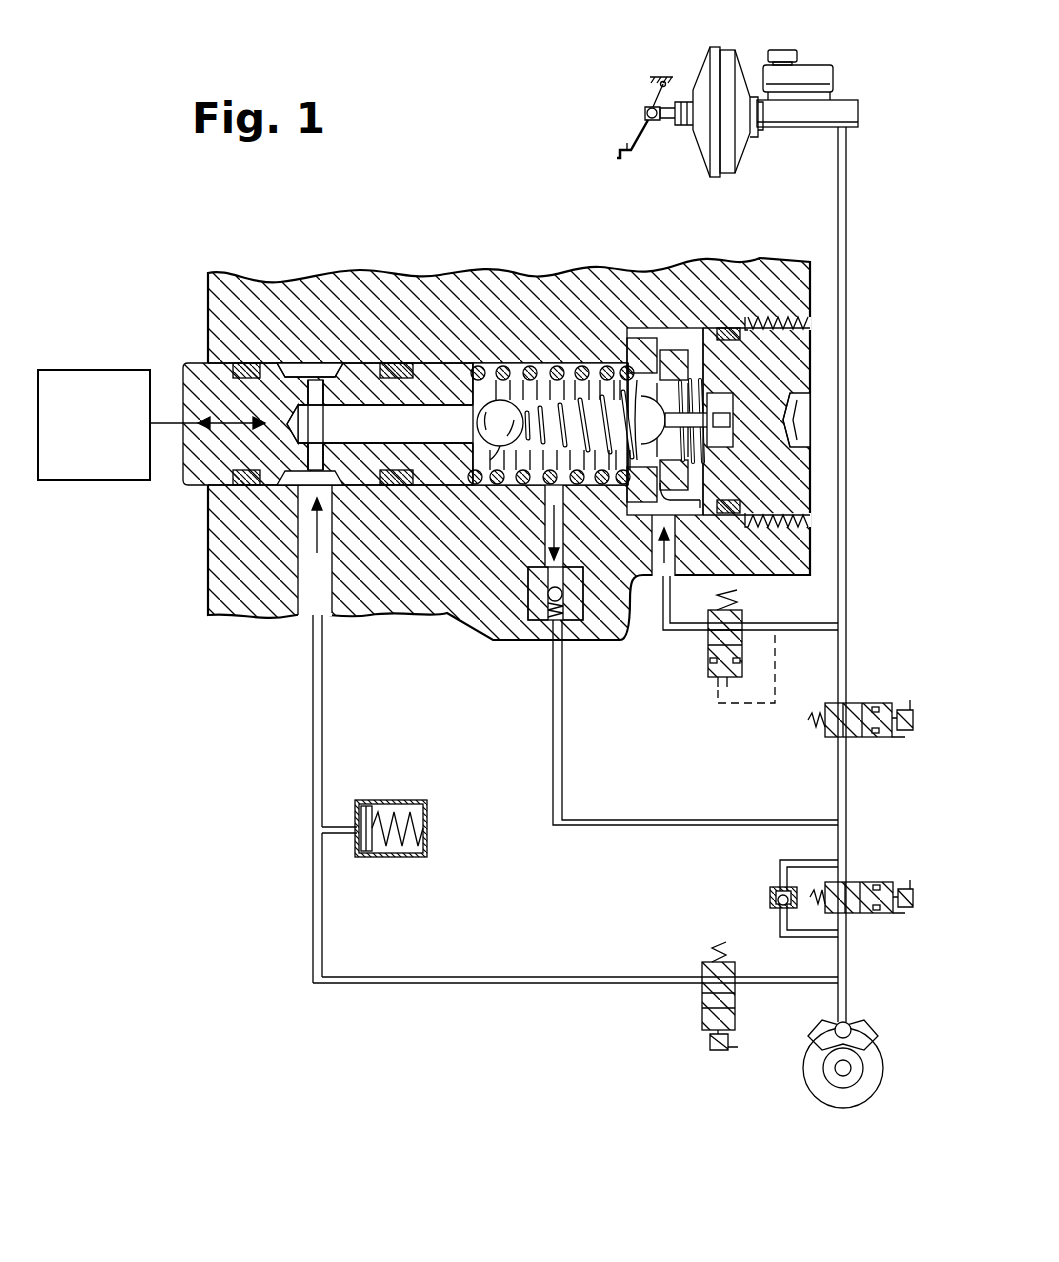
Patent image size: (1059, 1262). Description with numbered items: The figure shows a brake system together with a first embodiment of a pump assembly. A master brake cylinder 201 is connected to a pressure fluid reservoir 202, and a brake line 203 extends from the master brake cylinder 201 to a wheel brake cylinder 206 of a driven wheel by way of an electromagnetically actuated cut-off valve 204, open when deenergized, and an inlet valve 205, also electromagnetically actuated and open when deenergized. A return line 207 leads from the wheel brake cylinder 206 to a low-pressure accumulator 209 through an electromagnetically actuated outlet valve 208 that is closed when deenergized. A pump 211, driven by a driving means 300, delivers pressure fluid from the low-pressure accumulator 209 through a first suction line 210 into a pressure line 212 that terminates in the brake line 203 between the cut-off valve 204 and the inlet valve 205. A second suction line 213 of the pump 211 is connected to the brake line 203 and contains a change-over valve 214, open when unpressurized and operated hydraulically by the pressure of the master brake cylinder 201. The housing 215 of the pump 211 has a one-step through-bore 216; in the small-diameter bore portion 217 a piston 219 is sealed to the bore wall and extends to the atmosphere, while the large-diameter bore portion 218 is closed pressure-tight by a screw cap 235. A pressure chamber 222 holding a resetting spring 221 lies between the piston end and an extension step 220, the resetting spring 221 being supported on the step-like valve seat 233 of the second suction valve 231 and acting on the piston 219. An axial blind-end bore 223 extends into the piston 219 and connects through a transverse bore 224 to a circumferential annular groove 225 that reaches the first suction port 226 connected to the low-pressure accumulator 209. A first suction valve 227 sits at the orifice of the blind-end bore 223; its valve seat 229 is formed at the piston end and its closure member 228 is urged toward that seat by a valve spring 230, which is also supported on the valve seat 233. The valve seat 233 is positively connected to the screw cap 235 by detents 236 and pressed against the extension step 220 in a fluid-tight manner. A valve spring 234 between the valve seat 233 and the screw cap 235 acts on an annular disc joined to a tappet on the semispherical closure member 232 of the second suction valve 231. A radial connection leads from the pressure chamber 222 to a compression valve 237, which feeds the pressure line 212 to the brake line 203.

The master brake cylinder 201 is at (800, 107).
The pressure fluid reservoir 202 is at (815, 77).
The brake line 203 is at (848, 222).
The cut-off valve 204 is at (865, 703).
The inlet valve 205 is at (868, 882).
The wheel brake cylinder 206 is at (850, 1025).
The return line 207 is at (576, 985).
The outlet valve 208 is at (700, 1003).
The low-pressure accumulator 209 is at (395, 858).
The first suction line 210 is at (313, 763).
The pump 211 is at (440, 275).
The pressure line 212 is at (550, 717).
The second suction line 213 is at (673, 632).
The change-over valve 214 is at (708, 670).
The housing 215 is at (374, 418).
The one-step through-bore 216 is at (560, 365).
The small-diameter bore portion 217 is at (320, 385).
The large-diameter bore portion 218 is at (662, 385).
The piston 219 is at (215, 378).
The extension step 220 is at (643, 340).
The resetting spring 221 is at (529, 368).
The pressure chamber 222 is at (598, 360).
The axial blind-end bore 223 is at (368, 300).
The transverse bore 224 is at (313, 380).
The circumferential annular groove 225 is at (290, 375).
The first suction port 226 is at (312, 585).
The first suction valve 227 is at (472, 397).
The closure member 228 is at (482, 447).
The valve seat 229 is at (495, 460).
The valve spring 230 is at (545, 445).
The second suction valve 231 is at (657, 457).
The closure member 232 is at (643, 430).
The valve seat 233 is at (683, 362).
The valve spring 234 is at (700, 352).
The screw cap 235 is at (779, 330).
The detents 236 is at (698, 503).
The compression valve 237 is at (526, 612).
The driving means 300 is at (92, 368).